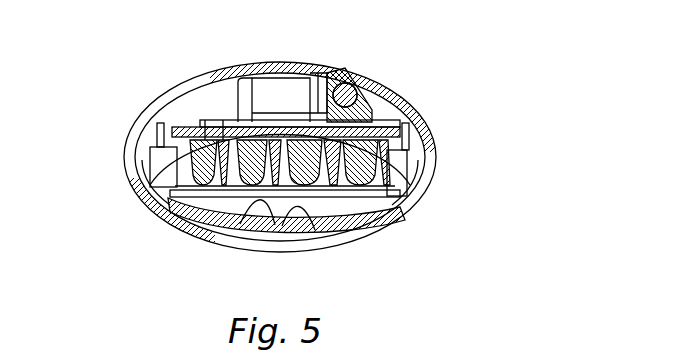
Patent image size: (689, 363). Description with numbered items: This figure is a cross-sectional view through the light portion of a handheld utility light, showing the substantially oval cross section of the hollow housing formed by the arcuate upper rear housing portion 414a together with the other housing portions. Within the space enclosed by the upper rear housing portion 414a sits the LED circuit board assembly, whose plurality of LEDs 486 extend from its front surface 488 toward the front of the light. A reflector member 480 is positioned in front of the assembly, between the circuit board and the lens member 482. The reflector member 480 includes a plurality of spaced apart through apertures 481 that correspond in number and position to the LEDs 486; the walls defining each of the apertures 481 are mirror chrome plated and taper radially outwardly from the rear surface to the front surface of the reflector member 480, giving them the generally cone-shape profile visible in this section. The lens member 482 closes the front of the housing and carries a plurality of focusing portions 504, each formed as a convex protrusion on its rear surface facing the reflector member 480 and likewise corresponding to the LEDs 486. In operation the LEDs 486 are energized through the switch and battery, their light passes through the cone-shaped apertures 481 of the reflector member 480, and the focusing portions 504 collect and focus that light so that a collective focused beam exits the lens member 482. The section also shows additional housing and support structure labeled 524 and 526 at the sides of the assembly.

The upper rear housing portion 414a is at (391, 84).
The LEDs 486 is at (212, 95).
The reflector member 480 is at (289, 122).
The front surface 488 is at (234, 135).
The post 526 is at (134, 153).
The side block 524 is at (134, 162).
The focusing portions 504 is at (297, 208).
The through apertures 481 is at (326, 197).
The lens member 482 is at (380, 217).